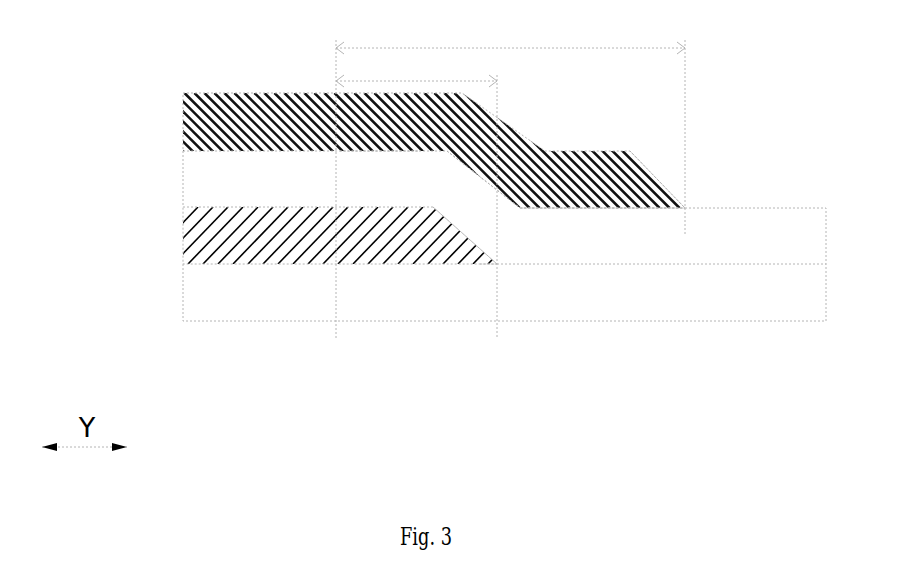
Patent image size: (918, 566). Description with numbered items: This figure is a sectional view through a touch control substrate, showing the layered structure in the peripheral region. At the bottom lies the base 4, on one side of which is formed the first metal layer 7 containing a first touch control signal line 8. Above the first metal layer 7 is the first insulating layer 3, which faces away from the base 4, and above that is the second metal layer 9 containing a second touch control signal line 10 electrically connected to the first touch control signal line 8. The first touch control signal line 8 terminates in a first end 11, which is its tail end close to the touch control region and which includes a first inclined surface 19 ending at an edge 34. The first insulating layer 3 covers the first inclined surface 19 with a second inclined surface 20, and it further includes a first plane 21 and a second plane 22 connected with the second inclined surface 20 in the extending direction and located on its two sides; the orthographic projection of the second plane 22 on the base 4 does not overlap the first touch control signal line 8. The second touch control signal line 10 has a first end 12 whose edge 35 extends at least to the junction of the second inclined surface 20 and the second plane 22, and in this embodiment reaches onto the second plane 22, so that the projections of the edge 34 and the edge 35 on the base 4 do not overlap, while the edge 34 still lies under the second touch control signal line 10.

The second metal layer 9 is at (410, 150).
The second touch control signal line 10 is at (183, 123).
The first insulating layer 3 is at (212, 179).
The first metal layer 7 is at (300, 238).
The first touch control signal line 8 is at (210, 252).
The base 4 is at (238, 292).
The first end of second touch control signal line 12 is at (510, 173).
The first end of first touch control signal line 11 is at (416, 192).
The first plane 21 is at (378, 151).
The first inclined surface 19 is at (445, 217).
The second inclined surface 20 is at (485, 178).
The edge of first end of first touch control signal line 34 is at (497, 264).
The second plane 22 is at (602, 208).
The edge of first end of second touch control signal line 35 is at (685, 208).